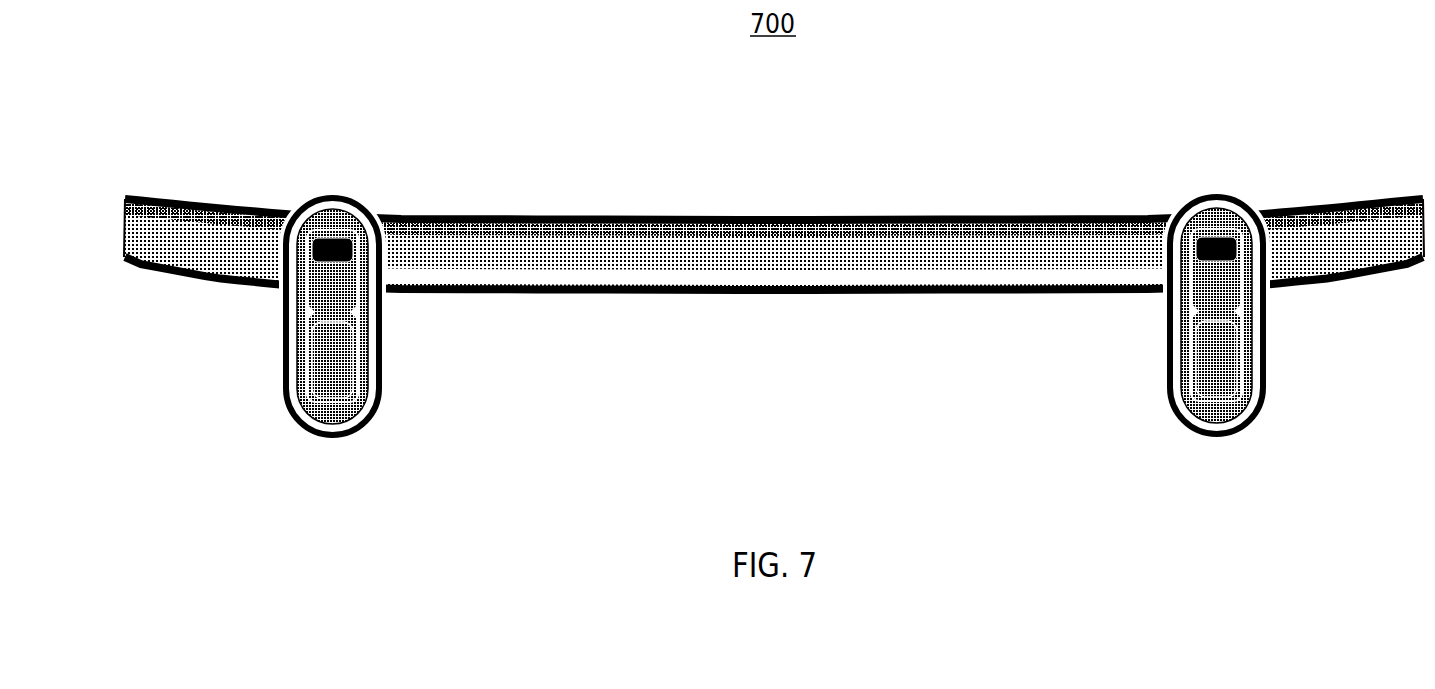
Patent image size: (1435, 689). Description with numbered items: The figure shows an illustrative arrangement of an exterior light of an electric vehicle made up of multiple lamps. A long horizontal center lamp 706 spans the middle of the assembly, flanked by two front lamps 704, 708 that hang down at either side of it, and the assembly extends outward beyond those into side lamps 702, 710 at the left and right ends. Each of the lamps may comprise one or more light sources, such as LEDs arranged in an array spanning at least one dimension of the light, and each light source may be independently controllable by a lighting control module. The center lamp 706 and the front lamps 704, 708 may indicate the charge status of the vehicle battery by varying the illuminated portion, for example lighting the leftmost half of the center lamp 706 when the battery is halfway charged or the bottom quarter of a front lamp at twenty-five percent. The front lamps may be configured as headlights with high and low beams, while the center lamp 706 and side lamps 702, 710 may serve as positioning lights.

The side lamp 702 is at (217, 240).
The front lamp 704 is at (330, 218).
The center lamp 706 is at (605, 255).
The front lamp 708 is at (1217, 218).
The side lamp 710 is at (1357, 233).